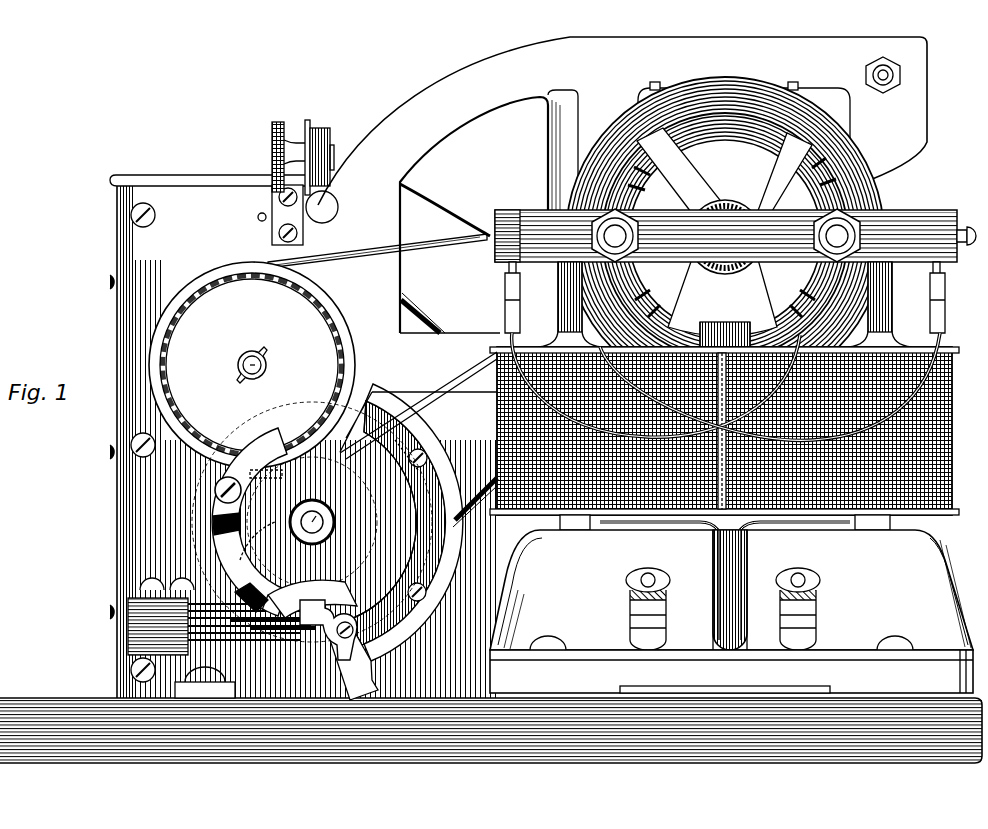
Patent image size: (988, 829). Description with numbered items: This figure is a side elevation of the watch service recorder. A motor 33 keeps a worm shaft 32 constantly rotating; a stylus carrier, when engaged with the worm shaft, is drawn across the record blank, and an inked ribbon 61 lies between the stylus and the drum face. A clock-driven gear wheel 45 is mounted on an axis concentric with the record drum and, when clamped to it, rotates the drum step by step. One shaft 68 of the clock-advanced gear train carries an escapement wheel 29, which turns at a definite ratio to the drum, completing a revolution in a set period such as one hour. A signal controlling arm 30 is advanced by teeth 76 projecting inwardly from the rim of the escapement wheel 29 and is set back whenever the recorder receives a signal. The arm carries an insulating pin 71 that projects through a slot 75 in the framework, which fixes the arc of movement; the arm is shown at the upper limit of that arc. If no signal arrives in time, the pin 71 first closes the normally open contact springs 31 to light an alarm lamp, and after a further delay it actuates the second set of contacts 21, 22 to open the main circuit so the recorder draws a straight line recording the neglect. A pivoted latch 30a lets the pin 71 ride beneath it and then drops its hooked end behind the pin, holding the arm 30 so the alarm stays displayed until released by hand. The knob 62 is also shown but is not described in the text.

The contact 21 is at (315, 618).
The spring contact 22 is at (300, 660).
The escapement wheel 29 is at (455, 549).
The signal controlling arm 30 is at (266, 484).
The latch 30a is at (260, 541).
The contact springs 31 is at (309, 588).
The worm shaft 32 is at (238, 365).
The motor 33 is at (880, 200).
The gear wheel 45 is at (432, 304).
The inked ribbon 61 is at (330, 178).
The knurled knob 62 is at (329, 120).
The shaft 68 is at (314, 510).
The insulating pin 71 is at (214, 489).
The slot 75 is at (232, 542).
The teeth 76 is at (415, 545).